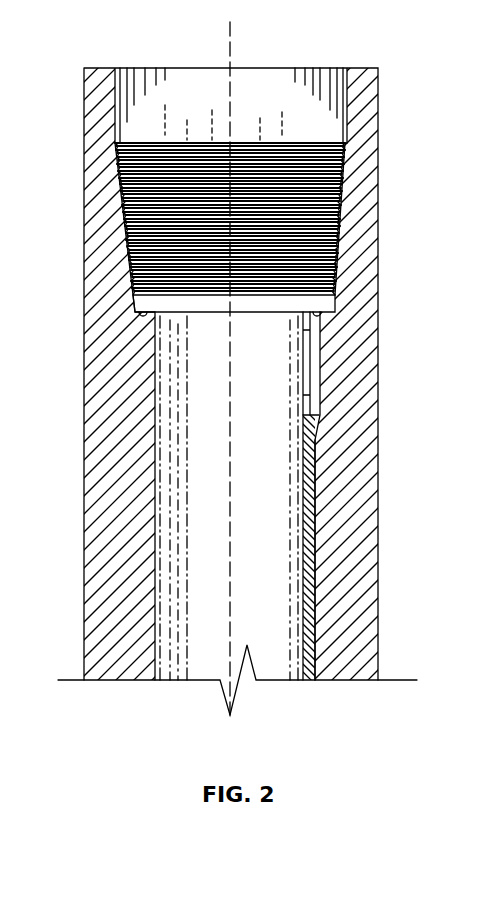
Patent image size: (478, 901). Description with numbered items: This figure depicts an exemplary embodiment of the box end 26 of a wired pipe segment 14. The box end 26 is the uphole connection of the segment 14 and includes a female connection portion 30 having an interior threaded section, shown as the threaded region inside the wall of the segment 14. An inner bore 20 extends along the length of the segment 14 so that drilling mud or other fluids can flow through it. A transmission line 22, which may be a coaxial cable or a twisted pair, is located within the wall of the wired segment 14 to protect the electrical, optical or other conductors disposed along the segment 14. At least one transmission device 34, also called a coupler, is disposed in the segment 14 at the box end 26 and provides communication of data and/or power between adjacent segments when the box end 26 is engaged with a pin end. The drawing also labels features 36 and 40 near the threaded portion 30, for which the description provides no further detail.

The wired pipe segment 14 is at (100, 527).
The inner bore 20 is at (165, 597).
The transmission line 22 is at (317, 485).
The box end 26 is at (229, 50).
The female connection portion 30 is at (345, 205).
The transmission device 34 is at (143, 321).
The upper insert portion 36 is at (347, 88).
The seal ring 40 is at (340, 312).